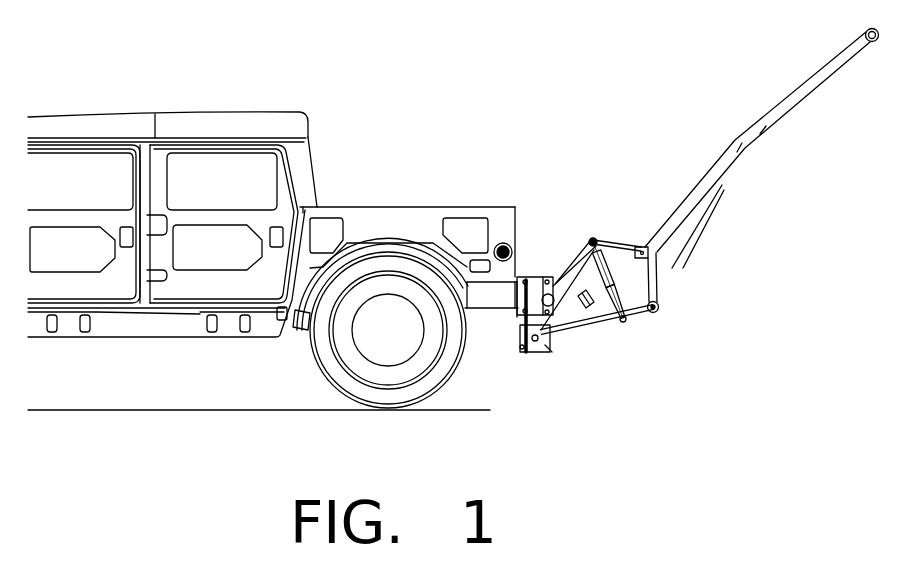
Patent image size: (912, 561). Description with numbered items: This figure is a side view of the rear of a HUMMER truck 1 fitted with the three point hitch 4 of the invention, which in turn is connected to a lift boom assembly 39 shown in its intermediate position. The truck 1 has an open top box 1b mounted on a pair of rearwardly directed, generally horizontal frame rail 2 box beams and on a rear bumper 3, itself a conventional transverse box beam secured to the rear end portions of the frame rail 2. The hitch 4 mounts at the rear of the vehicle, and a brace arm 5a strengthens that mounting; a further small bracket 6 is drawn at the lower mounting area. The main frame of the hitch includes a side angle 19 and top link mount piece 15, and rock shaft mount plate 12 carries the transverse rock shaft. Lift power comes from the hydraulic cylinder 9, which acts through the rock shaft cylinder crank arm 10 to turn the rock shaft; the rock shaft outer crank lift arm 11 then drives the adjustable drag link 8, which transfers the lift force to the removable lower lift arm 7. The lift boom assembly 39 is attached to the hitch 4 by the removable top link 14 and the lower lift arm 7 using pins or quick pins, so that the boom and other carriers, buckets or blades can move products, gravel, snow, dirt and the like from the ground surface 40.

The HUMMER truck 1 is at (172, 194).
The open top box 1b is at (406, 235).
The frame rail 2 is at (488, 367).
The rear bumper 3 is at (529, 245).
The three point hitch 4 is at (588, 114).
The brace arm 5a is at (513, 348).
The lower bracket 6 is at (532, 354).
The lower lift arm 7 is at (671, 317).
The drag link 8 is at (636, 298).
The cylinder 9 is at (621, 336).
The rock shaft cylinder crank arm 10 is at (626, 213).
The rock shaft outer crank lift arm 11 is at (588, 240).
The rock shaft mount plate 12 is at (558, 251).
The top link 14 is at (650, 250).
The top link mount piece 15 is at (585, 203).
The side angle 19 is at (599, 358).
The lift boom assembly 39 is at (762, 149).
The ground surface 40 is at (259, 386).